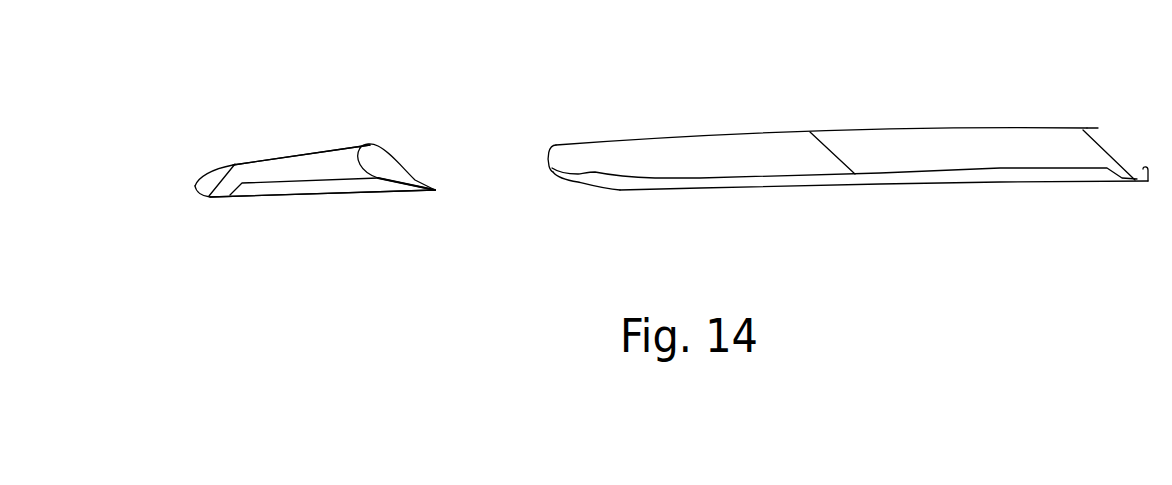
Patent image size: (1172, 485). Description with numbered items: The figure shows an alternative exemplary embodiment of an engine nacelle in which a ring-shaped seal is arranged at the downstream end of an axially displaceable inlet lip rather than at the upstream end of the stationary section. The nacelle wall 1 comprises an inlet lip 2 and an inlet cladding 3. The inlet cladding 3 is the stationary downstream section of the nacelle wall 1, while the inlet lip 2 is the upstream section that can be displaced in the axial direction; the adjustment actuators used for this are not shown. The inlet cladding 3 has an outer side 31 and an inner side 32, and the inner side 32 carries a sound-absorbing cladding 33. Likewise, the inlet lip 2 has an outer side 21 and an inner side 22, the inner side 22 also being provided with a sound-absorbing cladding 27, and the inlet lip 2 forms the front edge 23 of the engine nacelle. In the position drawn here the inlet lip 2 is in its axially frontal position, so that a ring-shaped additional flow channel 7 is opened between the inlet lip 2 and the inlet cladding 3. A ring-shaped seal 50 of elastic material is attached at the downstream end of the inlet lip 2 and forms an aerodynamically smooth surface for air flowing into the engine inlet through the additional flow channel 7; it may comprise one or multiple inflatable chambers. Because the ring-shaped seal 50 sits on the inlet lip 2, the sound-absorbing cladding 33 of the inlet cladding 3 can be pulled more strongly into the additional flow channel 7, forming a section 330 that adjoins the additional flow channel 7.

The nacelle wall 1 is at (701, 113).
The inlet lip 2 is at (312, 155).
The inlet cladding 3 is at (768, 132).
The additional flow channel 7 is at (486, 142).
The outer side 21 is at (243, 163).
The inner side 22 is at (277, 193).
The front edge 23 is at (197, 187).
The sound-absorbing cladding 27 is at (350, 193).
The ring-shaped seal 50 is at (380, 162).
The outer side 31 is at (940, 131).
The inner side 32 is at (945, 185).
The sound-absorbing cladding 33 is at (785, 178).
The section 330 is at (593, 174).